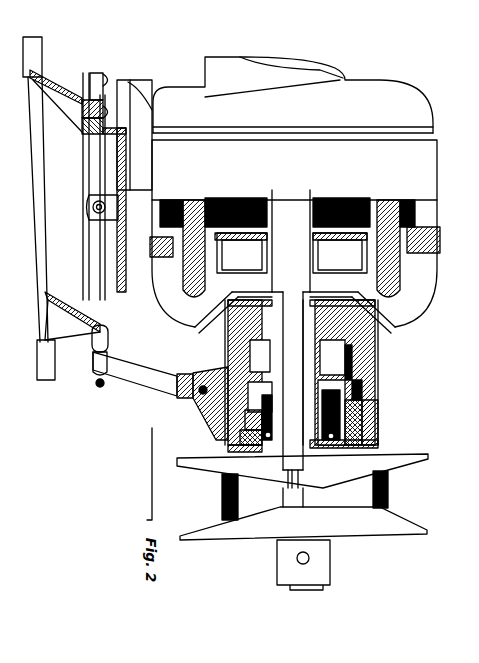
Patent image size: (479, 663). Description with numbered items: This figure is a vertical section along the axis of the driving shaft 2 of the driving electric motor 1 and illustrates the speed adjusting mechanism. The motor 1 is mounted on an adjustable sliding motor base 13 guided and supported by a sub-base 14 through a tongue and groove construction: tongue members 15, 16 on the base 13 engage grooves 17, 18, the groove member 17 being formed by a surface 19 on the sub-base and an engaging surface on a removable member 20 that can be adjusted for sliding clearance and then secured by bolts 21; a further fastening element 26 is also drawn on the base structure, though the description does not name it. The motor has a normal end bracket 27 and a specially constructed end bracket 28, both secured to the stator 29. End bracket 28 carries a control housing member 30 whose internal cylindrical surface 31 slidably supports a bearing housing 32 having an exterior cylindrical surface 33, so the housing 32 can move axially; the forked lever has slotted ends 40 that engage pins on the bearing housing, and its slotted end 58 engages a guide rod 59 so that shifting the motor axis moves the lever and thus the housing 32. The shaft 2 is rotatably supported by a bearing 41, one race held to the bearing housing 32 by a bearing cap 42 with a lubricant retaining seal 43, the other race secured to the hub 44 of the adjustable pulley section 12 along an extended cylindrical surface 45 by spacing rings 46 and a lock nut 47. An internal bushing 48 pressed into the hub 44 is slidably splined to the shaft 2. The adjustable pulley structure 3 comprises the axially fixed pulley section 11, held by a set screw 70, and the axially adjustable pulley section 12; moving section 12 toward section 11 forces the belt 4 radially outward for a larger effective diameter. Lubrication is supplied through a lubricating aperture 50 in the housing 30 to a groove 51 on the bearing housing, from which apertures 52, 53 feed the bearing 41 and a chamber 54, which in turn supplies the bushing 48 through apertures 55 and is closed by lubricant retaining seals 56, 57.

The driving electric motor 1 is at (206, 400).
The driving shaft 2 is at (288, 343).
The adjustable pulley structure 3 is at (449, 478).
The belt 4 is at (389, 492).
The pulley section 11 is at (412, 538).
The pulley section 12 is at (426, 455).
The adjustable sliding motor base 13 is at (125, 80).
The sub-base 14 is at (70, 66).
The tongue member 15 is at (83, 155).
The tongue member 16 is at (100, 250).
The groove member 17 is at (62, 108).
The groove 18 is at (72, 302).
The surface 19 is at (82, 108).
The removable member 20 is at (98, 72).
The bolts 21 is at (108, 76).
The bolt 26 is at (89, 205).
The end bracket 27 is at (382, 80).
The end bracket 28 is at (420, 312).
The stator 29 is at (438, 165).
The control housing member 30 is at (197, 374).
The internal cylindrical surface 31 is at (216, 370).
The bearing housing 32 is at (378, 430).
The exterior cylindrical surface 33 is at (260, 356).
The slotted ends 40 is at (308, 495).
The bearing 41 is at (366, 445).
The bearing cap 42 is at (325, 452).
The lubricant retaining seal 43 is at (312, 450).
The hub 44 is at (300, 448).
The extended cylindrical surface 45 is at (306, 372).
The spacing rings 46 is at (250, 440).
The lock nut 47 is at (240, 425).
The internal bushing 48 is at (262, 326).
The lubricating aperture 50 is at (375, 382).
The groove 51 is at (372, 348).
The aperture 52 is at (368, 400).
The aperture 53 is at (370, 365).
The chamber 54 is at (340, 330).
The apertures 55 is at (332, 357).
The lubricant retaining seal 56 is at (260, 411).
The lubricant retaining seal 57 is at (254, 328).
The slotted end 58 is at (92, 372).
The guide rod 59 is at (104, 390).
The set screw 70 is at (296, 557).